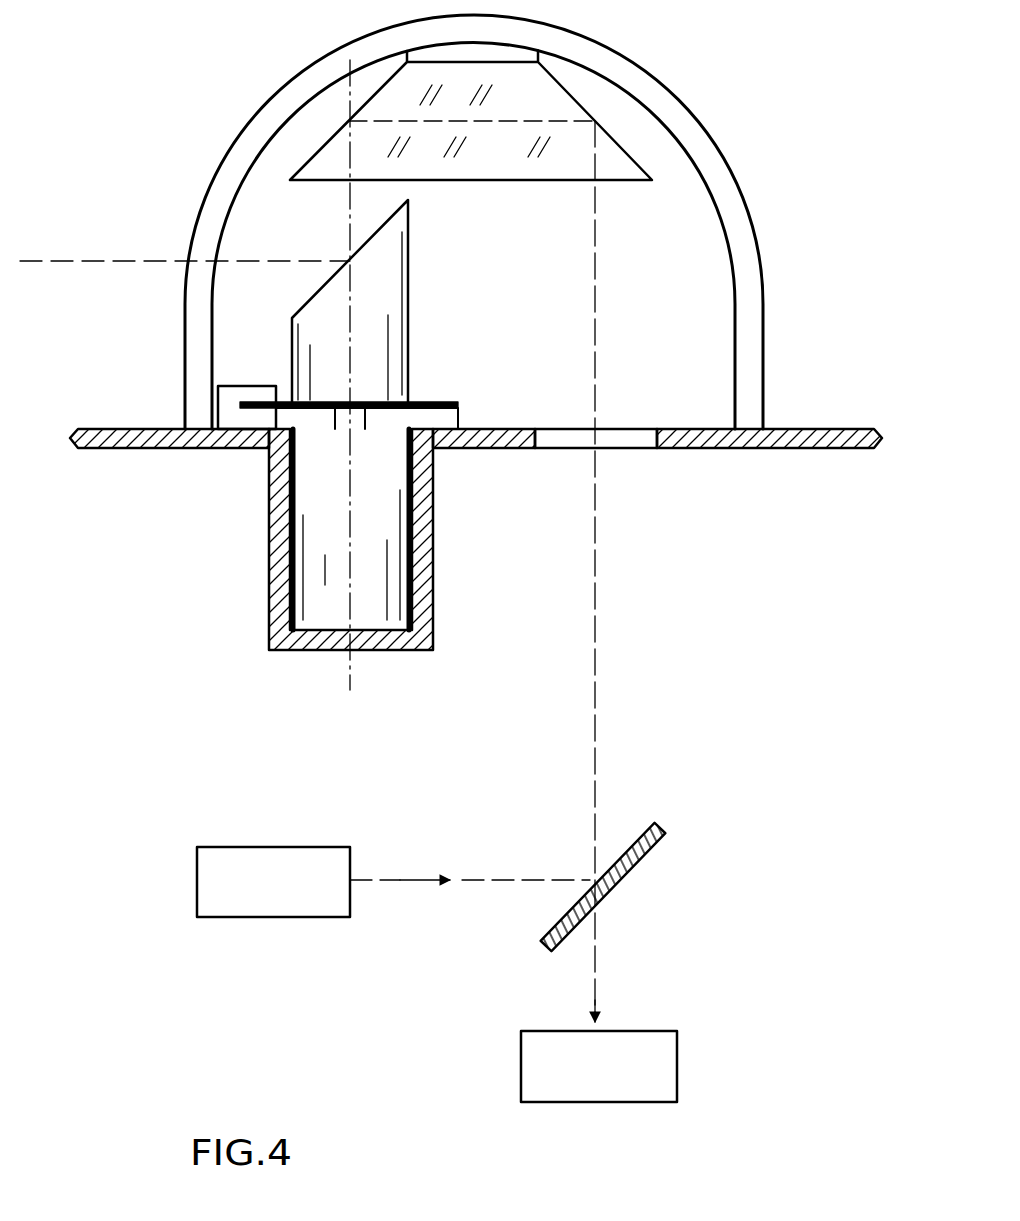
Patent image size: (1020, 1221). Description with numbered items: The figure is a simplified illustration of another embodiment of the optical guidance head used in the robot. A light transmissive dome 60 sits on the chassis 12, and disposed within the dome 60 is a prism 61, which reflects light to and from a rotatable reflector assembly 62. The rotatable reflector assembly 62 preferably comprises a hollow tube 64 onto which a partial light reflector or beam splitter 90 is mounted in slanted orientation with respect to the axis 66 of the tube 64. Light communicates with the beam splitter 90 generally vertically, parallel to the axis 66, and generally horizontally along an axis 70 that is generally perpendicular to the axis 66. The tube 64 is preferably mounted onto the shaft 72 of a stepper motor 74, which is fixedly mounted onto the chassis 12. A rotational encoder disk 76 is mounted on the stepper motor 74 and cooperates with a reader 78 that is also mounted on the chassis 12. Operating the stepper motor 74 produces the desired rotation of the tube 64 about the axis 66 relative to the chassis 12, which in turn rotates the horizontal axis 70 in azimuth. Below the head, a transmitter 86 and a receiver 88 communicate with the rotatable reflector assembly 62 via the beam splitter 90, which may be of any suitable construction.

The chassis 12 is at (218, 448).
The light transmissive dome 60 is at (726, 170).
The prism 61 is at (326, 138).
The rotatable reflector assembly 62 is at (262, 198).
The hollow tube 64 is at (410, 303).
The axis of the tube 66 is at (353, 660).
The axis 70 is at (112, 260).
The shaft 72 is at (357, 418).
The stepper motor 74 is at (390, 517).
The rotational encoder disk 76 is at (428, 400).
The reader 78 is at (222, 392).
The transmitter 86 is at (290, 847).
The receiver 88 is at (633, 1030).
The beam splitter 90 is at (643, 857).